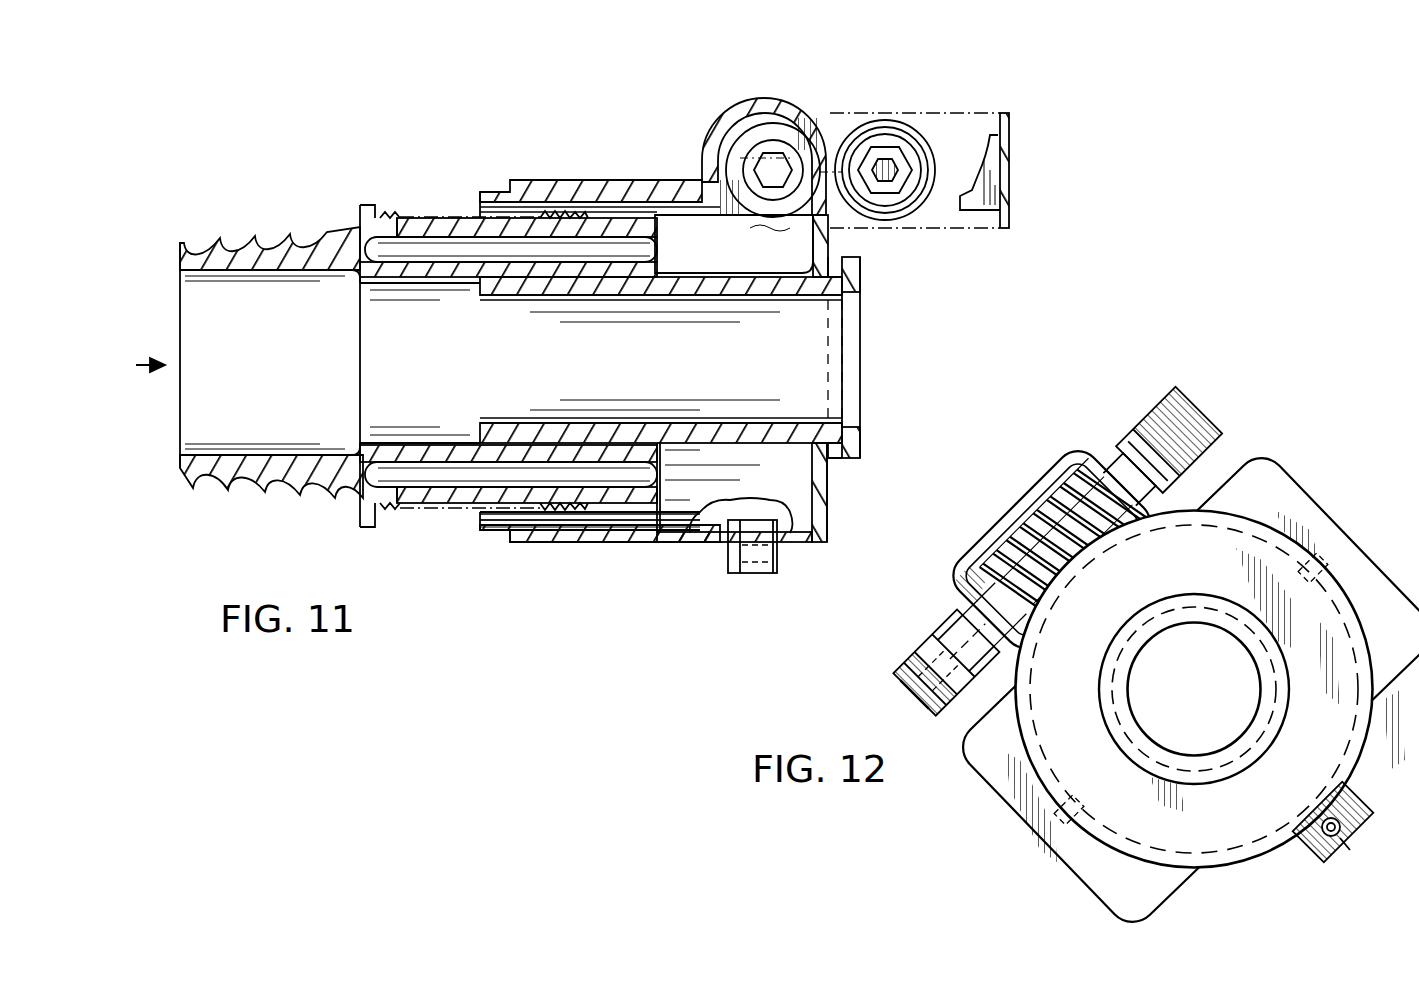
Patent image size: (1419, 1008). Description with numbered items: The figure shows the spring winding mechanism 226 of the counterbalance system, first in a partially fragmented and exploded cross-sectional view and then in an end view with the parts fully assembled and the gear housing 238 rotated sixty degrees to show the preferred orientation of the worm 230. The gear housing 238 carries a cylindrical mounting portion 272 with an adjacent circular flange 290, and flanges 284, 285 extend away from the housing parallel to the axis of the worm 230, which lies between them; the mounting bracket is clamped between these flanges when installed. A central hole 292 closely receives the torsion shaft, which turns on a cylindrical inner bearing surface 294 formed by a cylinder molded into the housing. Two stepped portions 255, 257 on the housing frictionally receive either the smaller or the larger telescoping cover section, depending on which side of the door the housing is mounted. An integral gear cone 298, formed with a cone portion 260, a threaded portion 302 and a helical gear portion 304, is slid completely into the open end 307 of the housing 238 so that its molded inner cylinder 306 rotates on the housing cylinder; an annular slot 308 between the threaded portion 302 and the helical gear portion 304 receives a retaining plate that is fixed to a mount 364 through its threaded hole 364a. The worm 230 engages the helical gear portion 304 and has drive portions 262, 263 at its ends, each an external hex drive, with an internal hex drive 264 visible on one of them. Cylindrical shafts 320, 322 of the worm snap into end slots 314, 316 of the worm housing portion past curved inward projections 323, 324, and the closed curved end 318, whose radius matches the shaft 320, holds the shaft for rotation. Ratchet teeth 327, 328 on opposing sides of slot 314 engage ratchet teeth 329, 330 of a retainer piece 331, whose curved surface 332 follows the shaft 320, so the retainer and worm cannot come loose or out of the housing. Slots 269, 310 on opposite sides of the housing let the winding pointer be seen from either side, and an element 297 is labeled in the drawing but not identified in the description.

In FIG. 11, the winding mechanism 226 is at (692, 136).
In FIG. 11, the worm 230 is at (912, 214).
In FIG. 12, the worm 230 is at (984, 542).
In FIG. 11, the gear housing 238 is at (630, 545).
In FIG. 12, the gear housing 238 is at (1255, 515).
In FIG. 11, the stepped portion 255 is at (490, 542).
In FIG. 11, the stepped portion 257 is at (528, 542).
In FIG. 11, the cone portion 260 is at (285, 494).
In FIG. 11, the drive portion 262 is at (920, 138).
In FIG. 12, the drive portion 262 is at (944, 690).
In FIG. 12, the drive portion 263 is at (1210, 420).
In FIG. 11, the internal hex drive 264 is at (900, 175).
In FIG. 12, the slot 269 is at (1330, 582).
In FIG. 11, the cylindrical mounting portion 272 is at (838, 458).
In FIG. 12, the cylindrical mounting portion 272 is at (1290, 682).
In FIG. 12, the flange 284 is at (1300, 478).
In FIG. 12, the flange 285 is at (1000, 820).
In FIG. 11, the circular flange 290 is at (862, 438).
In FIG. 11, the central hole 292 is at (850, 337).
In FIG. 12, the central hole 292 is at (1194, 689).
In FIG. 11, the cylindrical inner bearing surface 294 is at (625, 380).
In FIG. 12, the cylindrical inner bearing surface 294 is at (1140, 675).
In FIG. 11, the chamber 297 is at (710, 450).
In FIG. 11, the gear cone 298 is at (331, 200).
In FIG. 11, the threaded portion 302 is at (397, 217).
In FIG. 11, the helical gear portion 304 is at (612, 200).
In FIG. 12, the helical gear portion 304 is at (1082, 628).
In FIG. 11, the inner cylinder 306 is at (668, 270).
In FIG. 11, the open end 307 is at (480, 520).
In FIG. 11, the annular slot 308 is at (578, 212).
In FIG. 12, the slot 310 is at (1085, 808).
In FIG. 11, the end slot 314 is at (792, 138).
In FIG. 12, the end slot 314 is at (1116, 450).
In FIG. 12, the end slot 316 is at (952, 596).
In FIG. 11, the closed curved end 318 is at (745, 128).
In FIG. 11, the cylindrical shaft 320 is at (892, 122).
In FIG. 12, the cylindrical shaft 320 is at (935, 640).
In FIG. 12, the cylindrical shaft 322 is at (1140, 462).
In FIG. 11, the inward projection 323 is at (775, 128).
In FIG. 11, the inward projection 324 is at (780, 200).
In FIG. 12, the inward projection 324 is at (940, 680).
In FIG. 11, the ratchet teeth 327 is at (852, 130).
In FIG. 12, the ratchet teeth 327 is at (955, 628).
In FIG. 11, the ratchet teeth 328 is at (834, 205).
In FIG. 12, the ratchet teeth 328 is at (1000, 690).
In FIG. 11, the ratchet teeth 329 is at (1010, 122).
In FIG. 11, the ratchet teeth 330 is at (1010, 216).
In FIG. 11, the retainer piece 331 is at (1002, 102).
In FIG. 11, the curved surface 332 is at (948, 205).
In FIG. 11, the mount 364 is at (755, 573).
In FIG. 12, the mount 364 is at (1360, 812).
In FIG. 11, the threaded hole 364a is at (778, 562).
In FIG. 12, the threaded hole 364a is at (1345, 840).